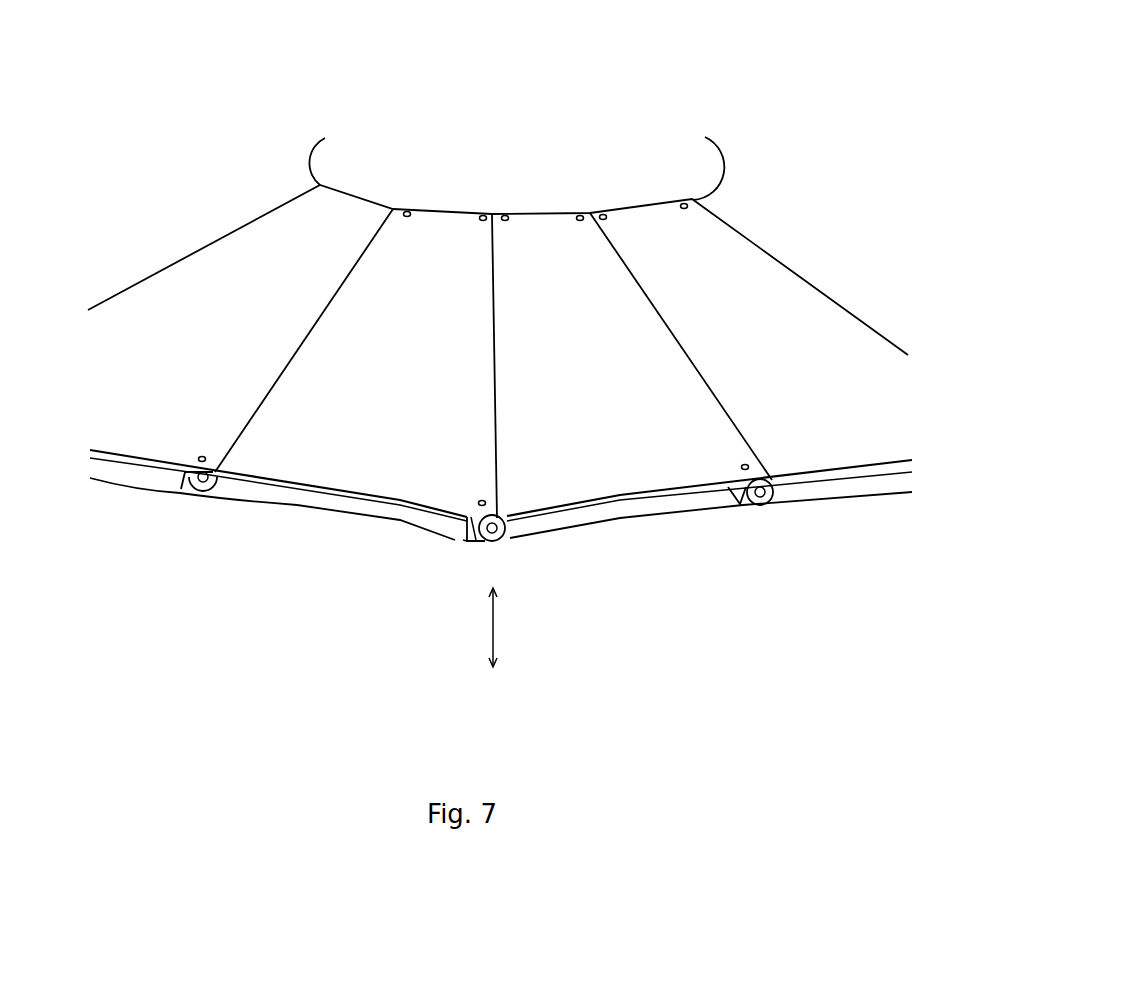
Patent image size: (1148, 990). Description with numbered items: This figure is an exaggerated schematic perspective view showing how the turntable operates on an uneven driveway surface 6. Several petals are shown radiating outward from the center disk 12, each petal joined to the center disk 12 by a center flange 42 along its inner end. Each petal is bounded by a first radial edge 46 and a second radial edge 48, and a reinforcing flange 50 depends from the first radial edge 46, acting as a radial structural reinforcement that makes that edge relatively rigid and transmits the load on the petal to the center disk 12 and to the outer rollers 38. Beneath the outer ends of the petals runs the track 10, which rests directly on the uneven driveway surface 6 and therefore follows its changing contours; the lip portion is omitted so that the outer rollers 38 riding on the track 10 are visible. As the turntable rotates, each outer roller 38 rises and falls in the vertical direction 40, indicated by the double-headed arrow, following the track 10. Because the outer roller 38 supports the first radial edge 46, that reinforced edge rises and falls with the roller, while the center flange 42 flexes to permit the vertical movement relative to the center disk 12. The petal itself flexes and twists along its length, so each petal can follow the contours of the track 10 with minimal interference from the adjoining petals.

The driveway surface 6 is at (145, 577).
The track 10 is at (297, 505).
The center disk 12 is at (513, 129).
The outer roller 38 is at (510, 538).
The vertical direction 40 is at (492, 620).
The center flange 42 is at (452, 223).
The first radial edge 46 is at (467, 518).
The second radial edge 48 is at (495, 362).
The reinforcing flange 50 is at (463, 540).